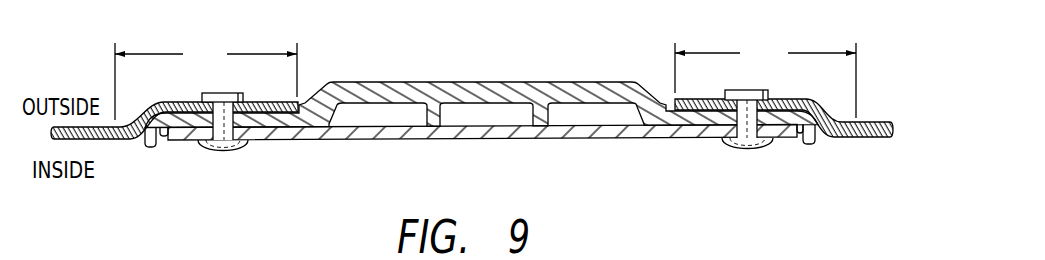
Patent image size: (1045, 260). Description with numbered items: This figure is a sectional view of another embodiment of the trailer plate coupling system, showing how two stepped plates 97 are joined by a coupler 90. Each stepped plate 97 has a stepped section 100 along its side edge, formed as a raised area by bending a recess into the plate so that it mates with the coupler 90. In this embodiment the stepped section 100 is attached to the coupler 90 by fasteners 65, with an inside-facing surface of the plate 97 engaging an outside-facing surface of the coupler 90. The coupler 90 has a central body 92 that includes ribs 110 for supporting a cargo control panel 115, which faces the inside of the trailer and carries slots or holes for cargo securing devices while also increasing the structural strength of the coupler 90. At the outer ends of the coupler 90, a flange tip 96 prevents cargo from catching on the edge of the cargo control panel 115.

The coupler 90 is at (476, 58).
The central body 92 is at (376, 84).
The cargo control panel 115 is at (388, 142).
The ribs 110 is at (540, 113).
The fasteners 65 is at (223, 151).
The flange tip 96 is at (153, 142).
The stepped plate 97 is at (107, 142).
The stepped section 100 is at (485, 79).